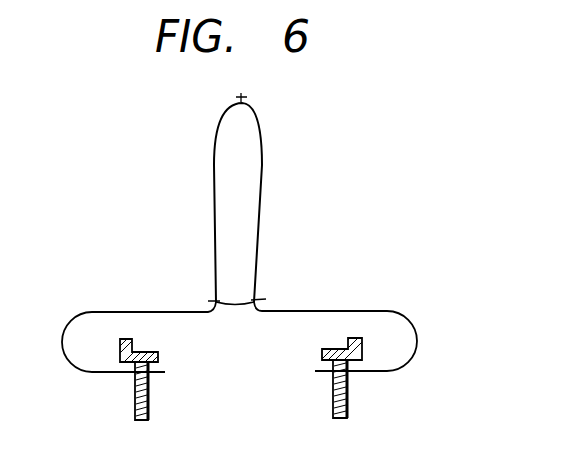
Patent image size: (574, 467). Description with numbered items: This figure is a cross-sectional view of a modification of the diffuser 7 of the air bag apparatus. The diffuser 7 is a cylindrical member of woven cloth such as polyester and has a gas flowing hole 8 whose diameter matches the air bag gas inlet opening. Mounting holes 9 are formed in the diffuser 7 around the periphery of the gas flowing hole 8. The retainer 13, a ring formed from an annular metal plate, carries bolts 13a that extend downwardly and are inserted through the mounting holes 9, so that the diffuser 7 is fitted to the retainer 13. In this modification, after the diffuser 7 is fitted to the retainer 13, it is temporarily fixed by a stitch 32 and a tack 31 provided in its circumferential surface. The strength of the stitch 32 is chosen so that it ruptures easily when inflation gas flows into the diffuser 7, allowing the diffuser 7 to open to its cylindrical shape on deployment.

The diffuser 7 is at (257, 184).
The gas flowing hole 8 is at (165, 374).
The mounting holes 9 is at (133, 376).
The retainer 13 is at (159, 355).
The bolts 13a is at (135, 423).
The tack 31 is at (205, 285).
The stitch 32 is at (258, 301).